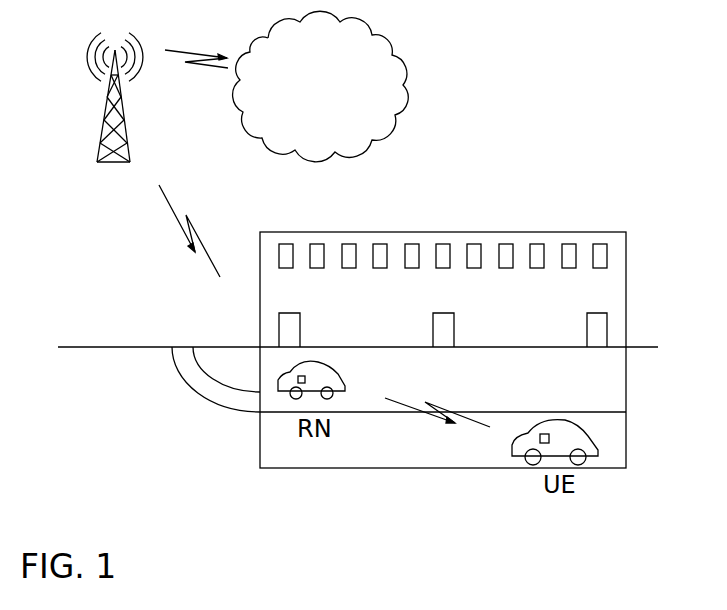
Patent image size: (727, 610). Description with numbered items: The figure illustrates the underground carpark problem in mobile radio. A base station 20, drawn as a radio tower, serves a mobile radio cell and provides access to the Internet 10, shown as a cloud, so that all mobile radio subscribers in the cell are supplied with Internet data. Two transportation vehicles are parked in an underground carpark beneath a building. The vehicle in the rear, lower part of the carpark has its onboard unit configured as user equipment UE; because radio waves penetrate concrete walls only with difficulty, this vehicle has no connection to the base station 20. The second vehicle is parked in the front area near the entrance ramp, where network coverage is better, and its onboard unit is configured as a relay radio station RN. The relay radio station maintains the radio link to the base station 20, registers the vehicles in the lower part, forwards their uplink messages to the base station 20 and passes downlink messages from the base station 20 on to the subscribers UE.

The Internet 10 is at (382, 83).
The base station 20 is at (127, 118).